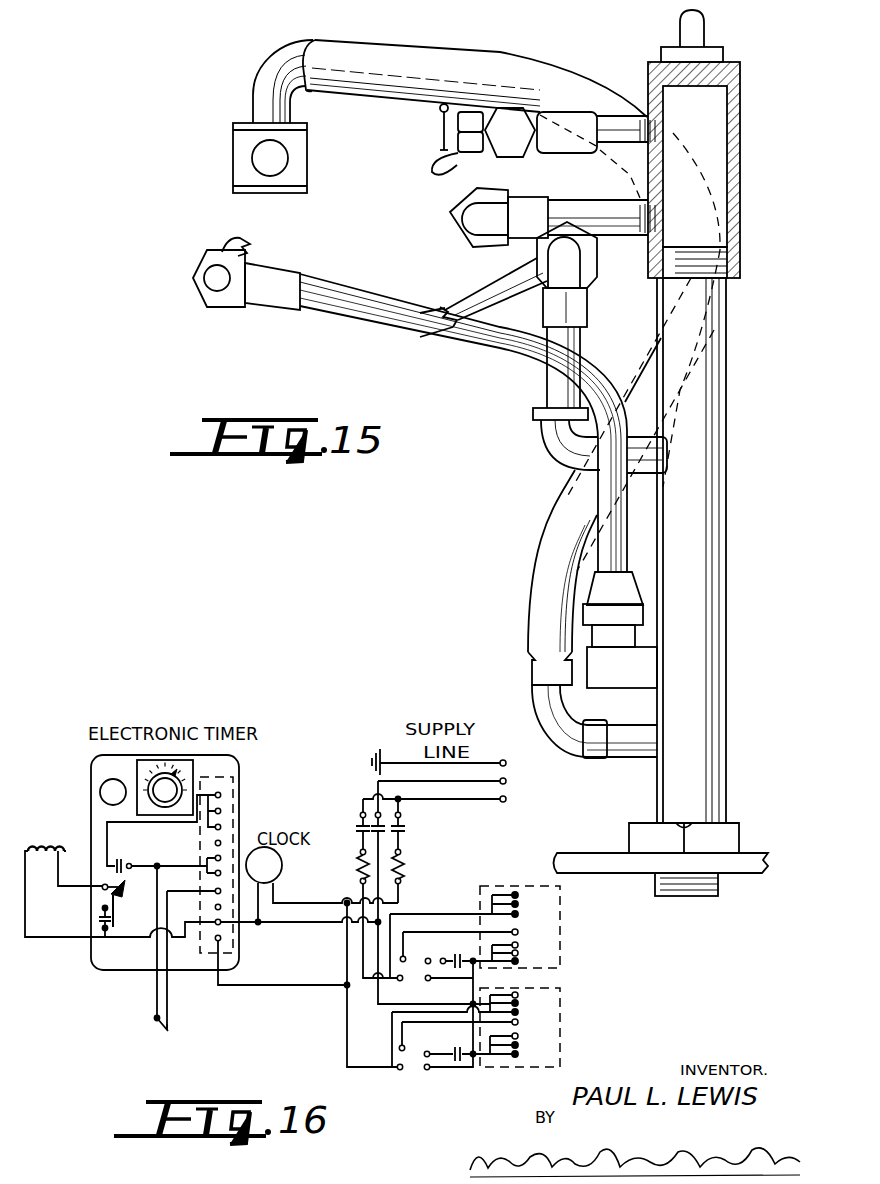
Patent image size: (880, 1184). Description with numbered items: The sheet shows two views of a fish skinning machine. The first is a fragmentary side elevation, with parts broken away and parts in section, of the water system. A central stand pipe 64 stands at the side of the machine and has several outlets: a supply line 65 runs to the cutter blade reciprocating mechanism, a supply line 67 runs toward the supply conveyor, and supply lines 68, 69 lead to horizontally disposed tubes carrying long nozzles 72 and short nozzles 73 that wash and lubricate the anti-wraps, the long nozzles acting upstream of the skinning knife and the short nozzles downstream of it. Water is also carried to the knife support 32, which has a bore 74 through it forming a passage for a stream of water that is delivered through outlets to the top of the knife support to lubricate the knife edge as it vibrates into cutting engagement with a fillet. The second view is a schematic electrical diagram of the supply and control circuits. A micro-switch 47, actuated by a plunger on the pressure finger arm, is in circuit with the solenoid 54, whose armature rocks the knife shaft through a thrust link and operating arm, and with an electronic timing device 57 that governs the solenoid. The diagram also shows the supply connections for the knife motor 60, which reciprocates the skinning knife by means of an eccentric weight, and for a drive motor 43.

In FIG. 15, the knife support 32 is at (232, 165).
In FIG. 15, the stand pipe 64 is at (703, 621).
In FIG. 15, the supply line 65 is at (480, 63).
In FIG. 15, the supply line 67 is at (473, 215).
In FIG. 15, the supply line 68 is at (372, 313).
In FIG. 15, the supply line 69 is at (557, 387).
In FIG. 15, the long nozzles 72 is at (497, 293).
In FIG. 15, the short nozzles 73 is at (250, 240).
In FIG. 15, the bore 74 is at (288, 158).
In FIG. 16, the drive motor 43 is at (540, 970).
In FIG. 16, the micro-switch 47 is at (146, 1018).
In FIG. 16, the solenoid 54 is at (50, 854).
In FIG. 16, the electronic timing device 57 is at (240, 789).
In FIG. 16, the motor 60 is at (546, 1029).